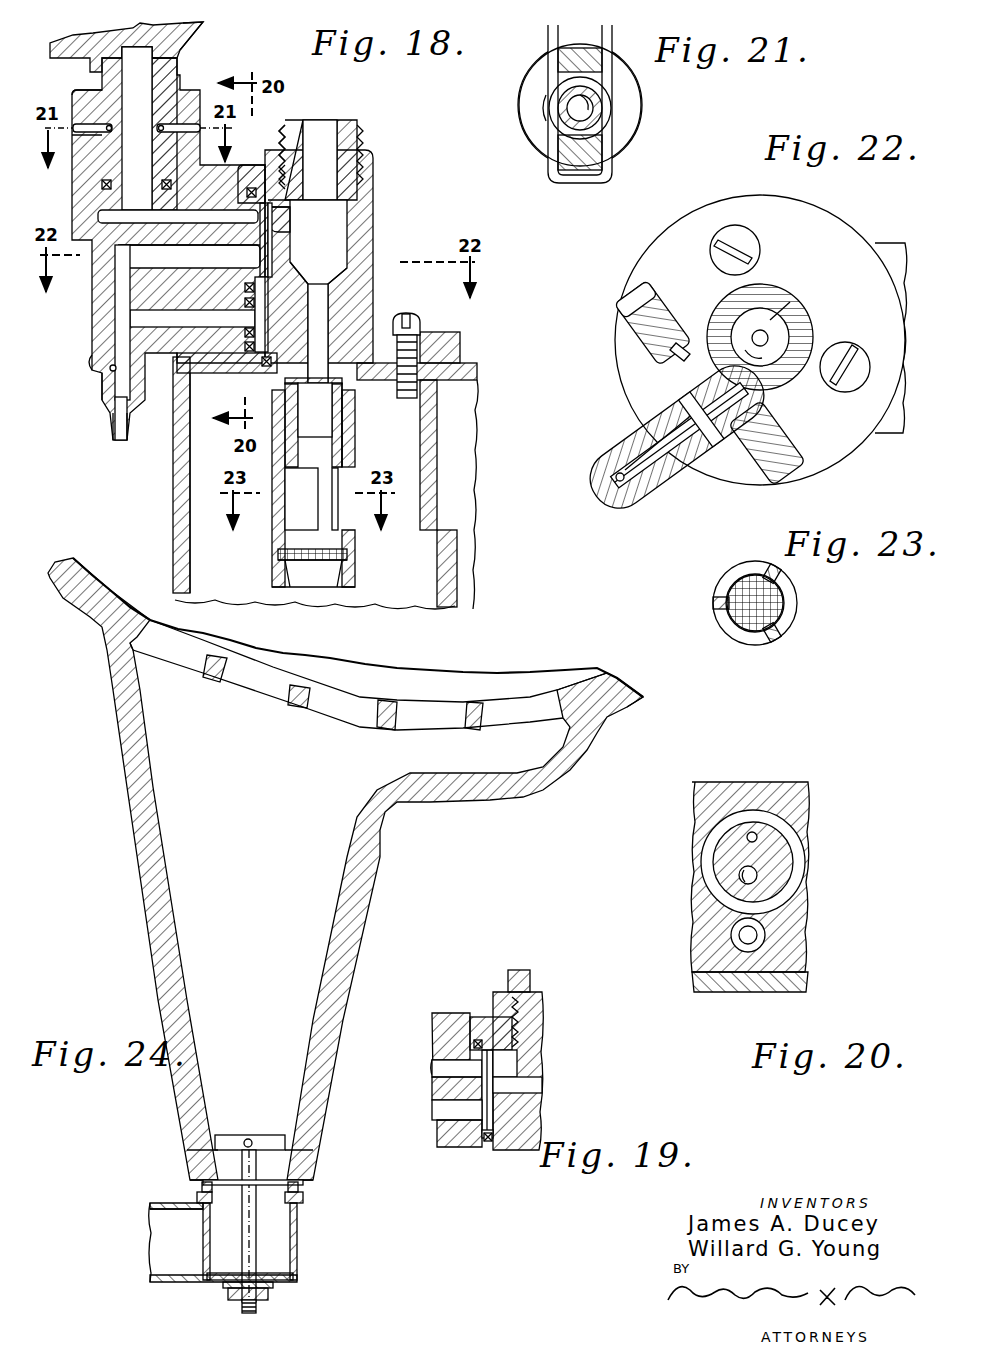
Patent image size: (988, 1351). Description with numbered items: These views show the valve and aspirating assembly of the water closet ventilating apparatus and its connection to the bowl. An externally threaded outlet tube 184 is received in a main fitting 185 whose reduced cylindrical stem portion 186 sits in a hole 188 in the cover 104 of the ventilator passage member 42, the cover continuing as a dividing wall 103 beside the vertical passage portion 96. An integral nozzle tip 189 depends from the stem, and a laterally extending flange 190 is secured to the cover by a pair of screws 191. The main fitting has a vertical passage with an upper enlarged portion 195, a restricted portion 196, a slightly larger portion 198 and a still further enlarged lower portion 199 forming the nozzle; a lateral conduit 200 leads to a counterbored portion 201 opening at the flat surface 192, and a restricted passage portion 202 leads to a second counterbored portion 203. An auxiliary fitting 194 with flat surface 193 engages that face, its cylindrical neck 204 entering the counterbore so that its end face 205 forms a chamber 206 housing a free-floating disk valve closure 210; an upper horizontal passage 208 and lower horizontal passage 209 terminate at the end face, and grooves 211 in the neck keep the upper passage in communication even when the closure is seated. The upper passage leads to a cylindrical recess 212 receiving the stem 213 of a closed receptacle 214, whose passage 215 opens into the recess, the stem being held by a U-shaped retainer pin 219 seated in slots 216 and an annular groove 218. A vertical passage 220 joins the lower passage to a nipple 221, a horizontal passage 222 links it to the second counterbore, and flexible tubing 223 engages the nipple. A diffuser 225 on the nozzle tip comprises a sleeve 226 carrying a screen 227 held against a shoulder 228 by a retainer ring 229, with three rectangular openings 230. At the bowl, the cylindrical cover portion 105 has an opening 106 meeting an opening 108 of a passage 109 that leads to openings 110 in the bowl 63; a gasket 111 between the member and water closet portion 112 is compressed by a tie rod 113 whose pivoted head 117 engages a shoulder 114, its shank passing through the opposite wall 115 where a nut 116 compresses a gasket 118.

In FIG. 18, the ventilator passage member 42 is at (170, 520).
In FIG. 22, the ventilator passage member 42 is at (895, 243).
In FIG. 24, the ventilator passage member 42 is at (150, 1285).
In FIG. 24, the bowl 63 is at (638, 710).
In FIG. 18, the vertical passage portion 96 is at (178, 550).
In FIG. 18, the dividing wall 103 is at (450, 590).
In FIG. 24, the dividing wall 103 is at (203, 1253).
In FIG. 18, the cover 104 is at (466, 370).
In FIG. 20, the cover 104 is at (782, 992).
In FIG. 24, the cylindrical cover portion 105 is at (298, 1245).
In FIG. 24, the opening 106 is at (292, 1205).
In FIG. 24, the opening 108 is at (280, 1170).
In FIG. 24, the passage 109 is at (230, 961).
In FIG. 24, the openings 110 is at (236, 677).
In FIG. 24, the gasket 111 is at (300, 1188).
In FIG. 24, the water closet portion 112 is at (195, 1167).
In FIG. 24, the tie rod 113 is at (256, 1265).
In FIG. 24, the shoulder 114 is at (200, 1157).
In FIG. 24, the wall 115 is at (278, 1288).
In FIG. 24, the nut 116 is at (232, 1300).
In FIG. 24, the pivoted head 117 is at (240, 1135).
In FIG. 24, the gasket 118 is at (266, 1292).
In FIG. 18, the outlet tube 184 is at (358, 128).
In FIG. 19, the outlet tube 184 is at (522, 970).
In FIG. 18, the main fitting 185 is at (380, 176).
In FIG. 22, the main fitting 185 is at (800, 300).
In FIG. 20, the main fitting 185 is at (790, 782).
In FIG. 19, the main fitting 185 is at (497, 988).
In FIG. 18, the stem portion 186 is at (345, 392).
In FIG. 18, the hole 188 is at (344, 384).
In FIG. 18, the nozzle tip 189 is at (345, 426).
In FIG. 18, the flange 190 is at (448, 338).
In FIG. 22, the flange 190 is at (850, 215).
In FIG. 18, the screws 191 is at (416, 322).
In FIG. 22, the screws 191 is at (738, 228).
In FIG. 18, the flat surface 192 is at (252, 165).
In FIG. 22, the flat surface 192 is at (612, 305).
In FIG. 19, the flat surface 192 is at (477, 1017).
In FIG. 18, the flat surface 193 is at (246, 190).
In FIG. 22, the flat surface 193 is at (625, 320).
In FIG. 19, the flat surface 193 is at (470, 1030).
In FIG. 18, the auxiliary fitting 194 is at (90, 328).
In FIG. 21, the auxiliary fitting 194 is at (517, 118).
In FIG. 22, the auxiliary fitting 194 is at (642, 510).
In FIG. 19, the auxiliary fitting 194 is at (430, 1016).
In FIG. 18, the upper enlarged portion 195 is at (348, 225).
In FIG. 22, the upper enlarged portion 195 is at (770, 318).
In FIG. 19, the upper enlarged portion 195 is at (518, 1065).
In FIG. 18, the restricted portion 196 is at (330, 292).
In FIG. 22, the restricted portion 196 is at (790, 315).
In FIG. 18, the passage portion 198 is at (330, 320).
In FIG. 18, the lower portion 199 is at (315, 410).
In FIG. 18, the lateral conduit 200 is at (291, 232).
In FIG. 22, the lateral conduit 200 is at (760, 352).
In FIG. 19, the lateral conduit 200 is at (540, 1085).
In FIG. 18, the counterbored portion 201 is at (291, 214).
In FIG. 22, the counterbored portion 201 is at (782, 392).
In FIG. 19, the counterbored portion 201 is at (489, 1140).
In FIG. 18, the restricted passage portion 202 is at (292, 295).
In FIG. 18, the counterbored portion 203 is at (264, 368).
In FIG. 18, the neck 204 is at (199, 314).
In FIG. 22, the neck 204 is at (650, 415).
In FIG. 20, the neck 204 is at (792, 852).
In FIG. 19, the neck 204 is at (450, 1140).
In FIG. 18, the end face 205 is at (260, 240).
In FIG. 22, the end face 205 is at (712, 455).
In FIG. 19, the end face 205 is at (460, 1088).
In FIG. 18, the chamber 206 is at (290, 178).
In FIG. 22, the chamber 206 is at (680, 345).
In FIG. 19, the chamber 206 is at (486, 1142).
In FIG. 18, the upper horizontal passage 208 is at (214, 248).
In FIG. 20, the upper horizontal passage 208 is at (740, 872).
In FIG. 19, the upper horizontal passage 208 is at (432, 1068).
In FIG. 18, the lower horizontal passage 209 is at (138, 248).
In FIG. 22, the lower horizontal passage 209 is at (618, 443).
In FIG. 20, the lower horizontal passage 209 is at (742, 880).
In FIG. 19, the lower horizontal passage 209 is at (450, 1110).
In FIG. 18, the valve closure 210 is at (272, 240).
In FIG. 22, the valve closure 210 is at (754, 329).
In FIG. 19, the valve closure 210 is at (494, 1092).
In FIG. 18, the grooves 211 is at (290, 153).
In FIG. 20, the grooves 211 is at (760, 832).
In FIG. 18, the recess 212 is at (100, 216).
In FIG. 18, the stem 213 is at (178, 82).
In FIG. 21, the stem 213 is at (600, 118).
In FIG. 18, the receptacle 214 is at (196, 32).
In FIG. 18, the passage 215 is at (125, 30).
In FIG. 21, the passage 215 is at (590, 103).
In FIG. 18, the slots 216 is at (90, 92).
In FIG. 21, the slots 216 is at (528, 88).
In FIG. 18, the groove 218 is at (128, 126).
In FIG. 21, the groove 218 is at (546, 106).
In FIG. 18, the retainer pin 219 is at (160, 130).
In FIG. 21, the retainer pin 219 is at (575, 184).
In FIG. 18, the vertical passage 220 is at (102, 368).
In FIG. 22, the vertical passage 220 is at (617, 483).
In FIG. 18, the nipple 221 is at (98, 385).
In FIG. 18, the horizontal passage 222 is at (158, 322).
In FIG. 20, the horizontal passage 222 is at (766, 938).
In FIG. 18, the flexible tubing 223 is at (108, 426).
In FIG. 18, the diffuser 225 is at (270, 535).
In FIG. 23, the diffuser 225 is at (800, 614).
In FIG. 18, the sleeve 226 is at (352, 447).
In FIG. 23, the sleeve 226 is at (778, 635).
In FIG. 18, the screen 227 is at (345, 549).
In FIG. 23, the screen 227 is at (740, 630).
In FIG. 18, the shoulder 228 is at (350, 556).
In FIG. 18, the retainer ring 229 is at (356, 573).
In FIG. 18, the openings 230 is at (318, 508).
In FIG. 23, the openings 230 is at (722, 610).